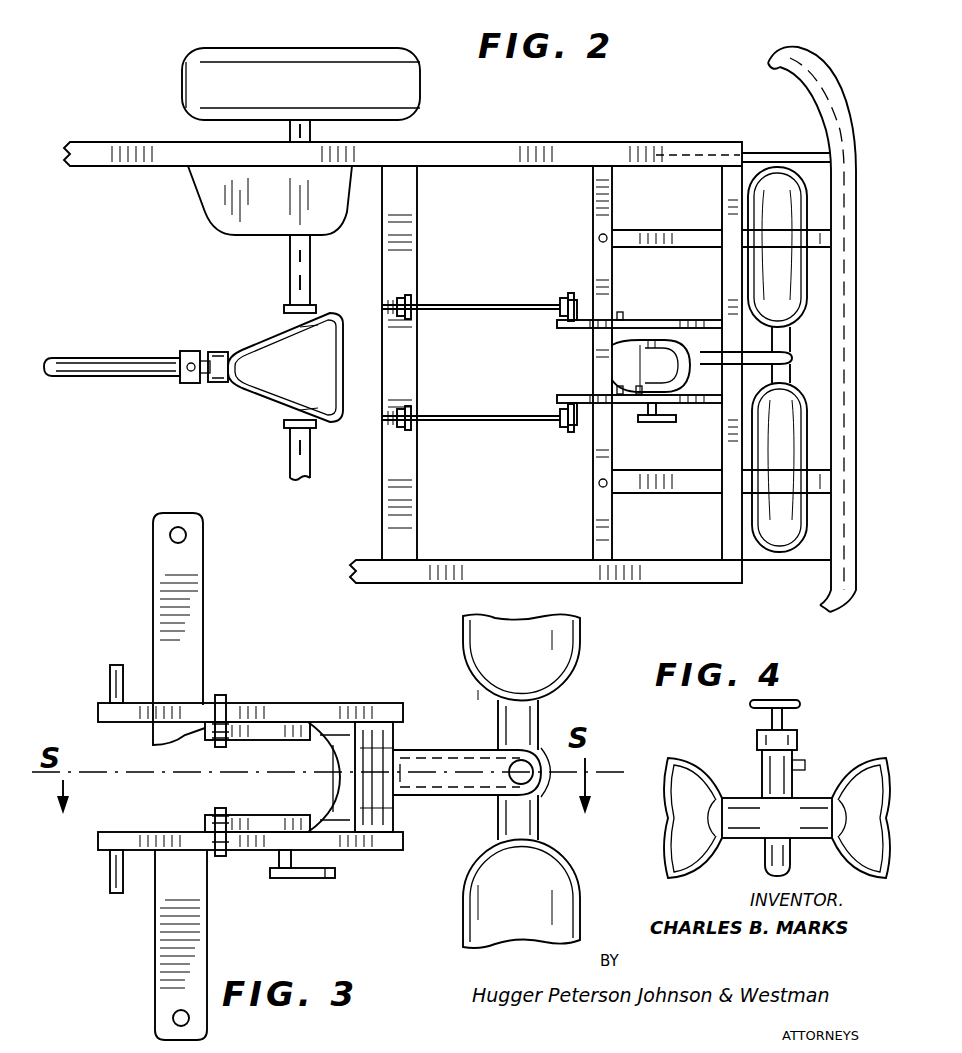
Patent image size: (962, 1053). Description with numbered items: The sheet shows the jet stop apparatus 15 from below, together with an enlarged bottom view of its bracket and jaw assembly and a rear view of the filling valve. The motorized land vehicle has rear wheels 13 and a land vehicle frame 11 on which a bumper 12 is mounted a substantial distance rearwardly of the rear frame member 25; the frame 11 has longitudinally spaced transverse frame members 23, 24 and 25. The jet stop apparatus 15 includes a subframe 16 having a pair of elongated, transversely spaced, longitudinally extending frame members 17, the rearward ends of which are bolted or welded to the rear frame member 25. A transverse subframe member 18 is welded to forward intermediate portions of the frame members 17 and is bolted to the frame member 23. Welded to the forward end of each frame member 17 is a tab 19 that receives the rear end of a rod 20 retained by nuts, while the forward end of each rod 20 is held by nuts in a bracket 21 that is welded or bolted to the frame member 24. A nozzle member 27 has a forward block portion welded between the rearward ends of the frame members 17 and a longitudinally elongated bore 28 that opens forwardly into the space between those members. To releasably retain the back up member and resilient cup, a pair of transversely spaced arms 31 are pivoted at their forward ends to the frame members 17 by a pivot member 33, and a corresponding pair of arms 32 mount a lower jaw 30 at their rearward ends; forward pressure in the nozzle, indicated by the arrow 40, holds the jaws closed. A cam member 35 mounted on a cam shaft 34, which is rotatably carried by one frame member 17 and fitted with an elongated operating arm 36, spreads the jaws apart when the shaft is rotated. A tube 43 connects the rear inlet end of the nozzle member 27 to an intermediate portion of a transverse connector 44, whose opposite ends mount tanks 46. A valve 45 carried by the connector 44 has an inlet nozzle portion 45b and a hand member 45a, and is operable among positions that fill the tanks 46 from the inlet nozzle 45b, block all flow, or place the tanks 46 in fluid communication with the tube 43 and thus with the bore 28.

In FIG. 2, the land vehicle frame 11 is at (478, 142).
In FIG. 2, the bumper 12 is at (805, 70).
In FIG. 2, the rear wheels 13 is at (400, 92).
In FIG. 2, the jet stop apparatus 15 is at (810, 292).
In FIG. 3, the jet stop apparatus 15 is at (155, 928).
In FIG. 2, the subframe 16 is at (557, 318).
In FIG. 3, the subframe 16 is at (247, 629).
In FIG. 2, the frame members 17 is at (574, 394).
In FIG. 3, the frame members 17 is at (378, 704).
In FIG. 2, the transverse subframe member 18 is at (574, 363).
In FIG. 3, the transverse subframe member 18 is at (170, 573).
In FIG. 2, the tab 19 is at (568, 426).
In FIG. 3, the tab 19 is at (116, 893).
In FIG. 2, the rod 20 is at (505, 430).
In FIG. 2, the bracket 21 is at (392, 305).
In FIG. 2, the transverse frame member 23 is at (597, 206).
In FIG. 2, the transverse frame member 24 is at (406, 228).
In FIG. 2, the rear frame member 25 is at (735, 527).
In FIG. 3, the nozzle member 27 is at (388, 740).
In FIG. 3, the bore 28 is at (472, 773).
In FIG. 3, the lower jaw 30 is at (338, 735).
In FIG. 3, the arms 31 is at (272, 740).
In FIG. 3, the arms 32 is at (256, 742).
In FIG. 3, the pivot member 33 is at (220, 694).
In FIG. 3, the cam shaft 34 is at (275, 860).
In FIG. 3, the cam member 35 is at (300, 814).
In FIG. 2, the operating arm 36 is at (645, 424).
In FIG. 3, the operating arm 36 is at (320, 882).
In FIG. 2, the arrow 40 is at (98, 259).
In FIG. 3, the tube 43 is at (490, 790).
In FIG. 4, the tube 43 is at (792, 870).
In FIG. 3, the transverse connector 44 is at (530, 728).
In FIG. 4, the transverse connector 44 is at (755, 826).
In FIG. 4, the valve 45 is at (782, 746).
In FIG. 4, the hand member 45a is at (802, 704).
In FIG. 4, the inlet nozzle portion 45b is at (800, 768).
In FIG. 2, the tanks 46 is at (796, 466).
In FIG. 3, the tanks 46 is at (488, 640).
In FIG. 4, the tanks 46 is at (685, 862).